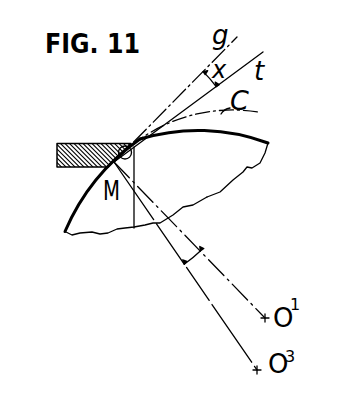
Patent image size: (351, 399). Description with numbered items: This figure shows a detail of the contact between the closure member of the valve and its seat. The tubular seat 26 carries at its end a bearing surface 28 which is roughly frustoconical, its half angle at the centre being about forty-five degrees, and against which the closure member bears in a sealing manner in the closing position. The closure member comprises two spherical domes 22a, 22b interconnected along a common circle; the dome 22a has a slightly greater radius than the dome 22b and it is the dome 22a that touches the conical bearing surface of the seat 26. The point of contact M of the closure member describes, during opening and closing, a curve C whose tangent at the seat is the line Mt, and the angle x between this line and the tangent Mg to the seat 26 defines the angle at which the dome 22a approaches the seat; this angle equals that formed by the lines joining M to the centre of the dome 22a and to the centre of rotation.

The spherical dome 22a is at (93, 218).
The spherical dome 22b is at (222, 155).
The tubular seat 26 is at (85, 153).
The bearing surface 28 is at (124, 146).